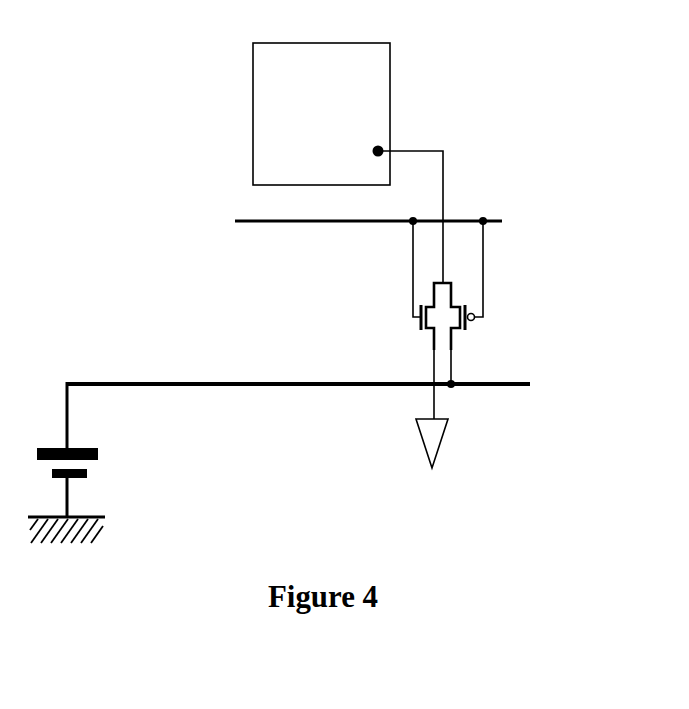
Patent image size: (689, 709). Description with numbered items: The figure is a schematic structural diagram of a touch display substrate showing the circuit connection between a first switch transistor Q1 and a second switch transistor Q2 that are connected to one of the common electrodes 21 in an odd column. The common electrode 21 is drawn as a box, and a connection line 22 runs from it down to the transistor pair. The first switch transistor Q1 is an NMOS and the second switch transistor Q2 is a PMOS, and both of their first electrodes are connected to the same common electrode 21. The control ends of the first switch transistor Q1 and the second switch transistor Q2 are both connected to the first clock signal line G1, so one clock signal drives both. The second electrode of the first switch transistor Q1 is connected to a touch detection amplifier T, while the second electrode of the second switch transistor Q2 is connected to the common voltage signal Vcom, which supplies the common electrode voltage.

The common electrode 21 is at (374, 80).
The connection wire 22 is at (446, 162).
The first clock signal line G1 is at (341, 221).
The first switch transistor Q1 is at (410, 318).
The second switch transistor Q2 is at (478, 322).
The common voltage signal Vcom is at (279, 461).
The touch detection amplifier T is at (441, 446).